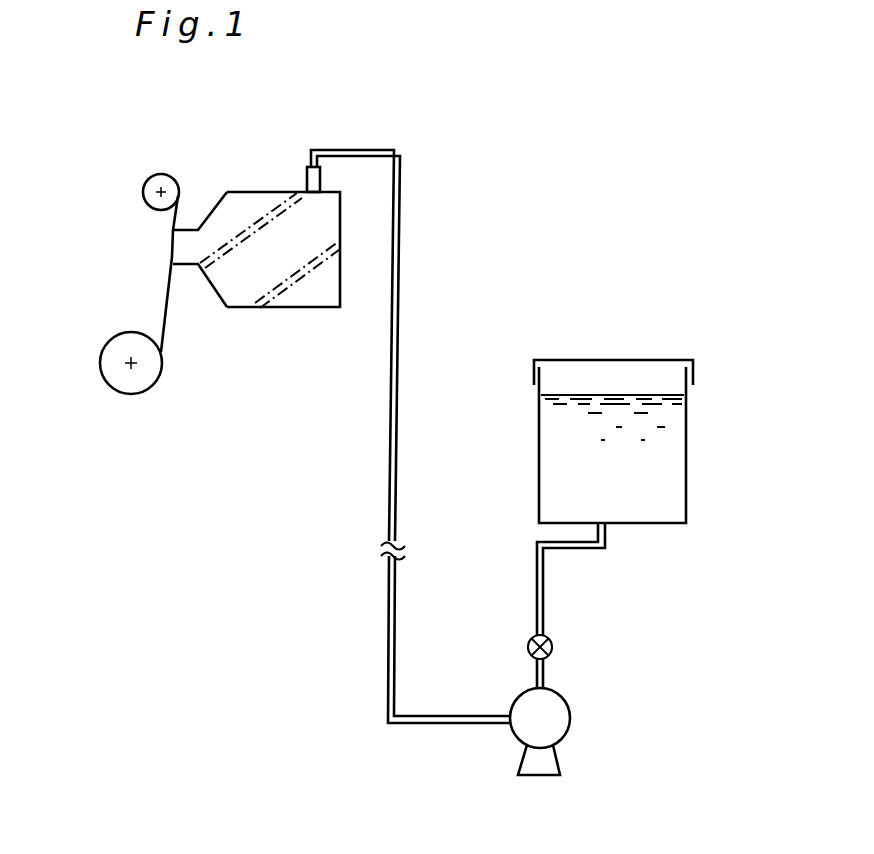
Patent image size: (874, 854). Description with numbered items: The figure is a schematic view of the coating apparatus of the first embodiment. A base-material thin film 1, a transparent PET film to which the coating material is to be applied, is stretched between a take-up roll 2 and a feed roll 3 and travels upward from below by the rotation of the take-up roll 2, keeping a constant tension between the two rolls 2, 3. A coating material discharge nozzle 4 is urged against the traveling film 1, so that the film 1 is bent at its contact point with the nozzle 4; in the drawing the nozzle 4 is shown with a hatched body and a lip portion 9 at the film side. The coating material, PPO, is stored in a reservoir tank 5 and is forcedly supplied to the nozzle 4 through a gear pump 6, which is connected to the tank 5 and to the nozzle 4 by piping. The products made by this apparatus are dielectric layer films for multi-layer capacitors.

The base-material thin film 1 is at (164, 328).
The take-up roll 2 is at (143, 186).
The feed roll 3 is at (101, 370).
The coating material discharge nozzle 4 is at (317, 303).
The reservoir tank 5 is at (689, 455).
The gear pump 6 is at (570, 727).
The applicator lip 9 is at (188, 237).